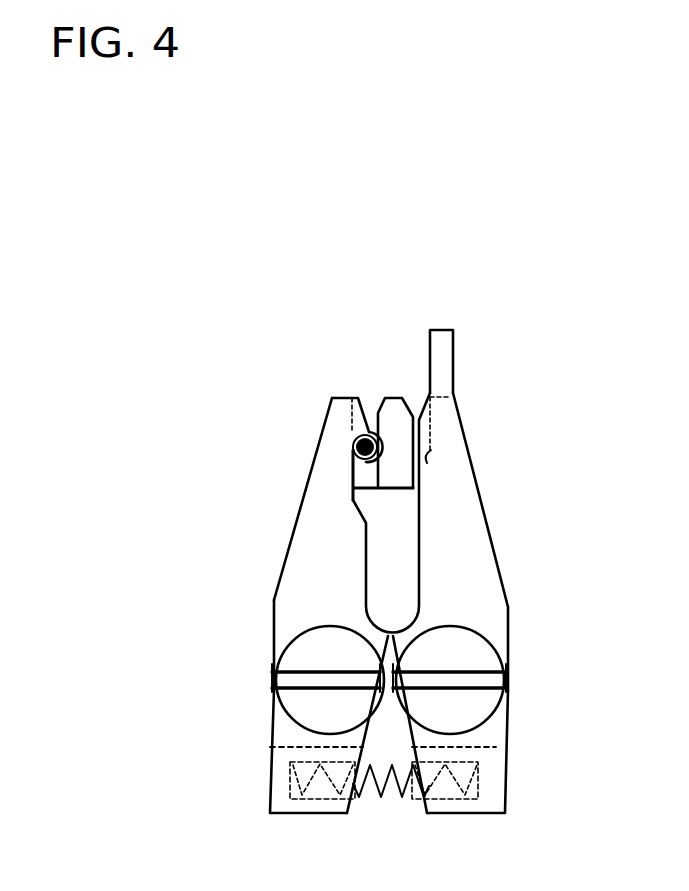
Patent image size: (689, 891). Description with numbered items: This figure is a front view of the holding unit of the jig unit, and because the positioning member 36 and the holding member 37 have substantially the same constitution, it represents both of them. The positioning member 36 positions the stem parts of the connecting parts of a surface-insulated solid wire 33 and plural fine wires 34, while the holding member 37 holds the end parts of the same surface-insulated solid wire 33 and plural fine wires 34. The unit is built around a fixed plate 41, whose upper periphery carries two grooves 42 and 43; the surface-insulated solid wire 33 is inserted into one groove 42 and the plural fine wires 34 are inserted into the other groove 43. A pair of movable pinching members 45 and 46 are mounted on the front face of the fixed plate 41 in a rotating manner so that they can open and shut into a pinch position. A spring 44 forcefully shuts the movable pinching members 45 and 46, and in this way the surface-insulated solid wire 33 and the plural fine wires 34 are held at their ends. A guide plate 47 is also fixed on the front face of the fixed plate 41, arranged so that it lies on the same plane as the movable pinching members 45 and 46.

The surface-insulated solid wire 33 is at (433, 461).
The plural fine wires 34 is at (357, 452).
The positioning member 36 is at (254, 471).
The holding member 37 is at (310, 430).
The fixed plate 41 is at (377, 570).
The groove 42 is at (413, 397).
The groove 43 is at (370, 403).
The spring 44 is at (392, 800).
The movable pinching member 45 is at (473, 572).
The movable pinching member 46 is at (297, 605).
The guide plate 47 is at (368, 477).